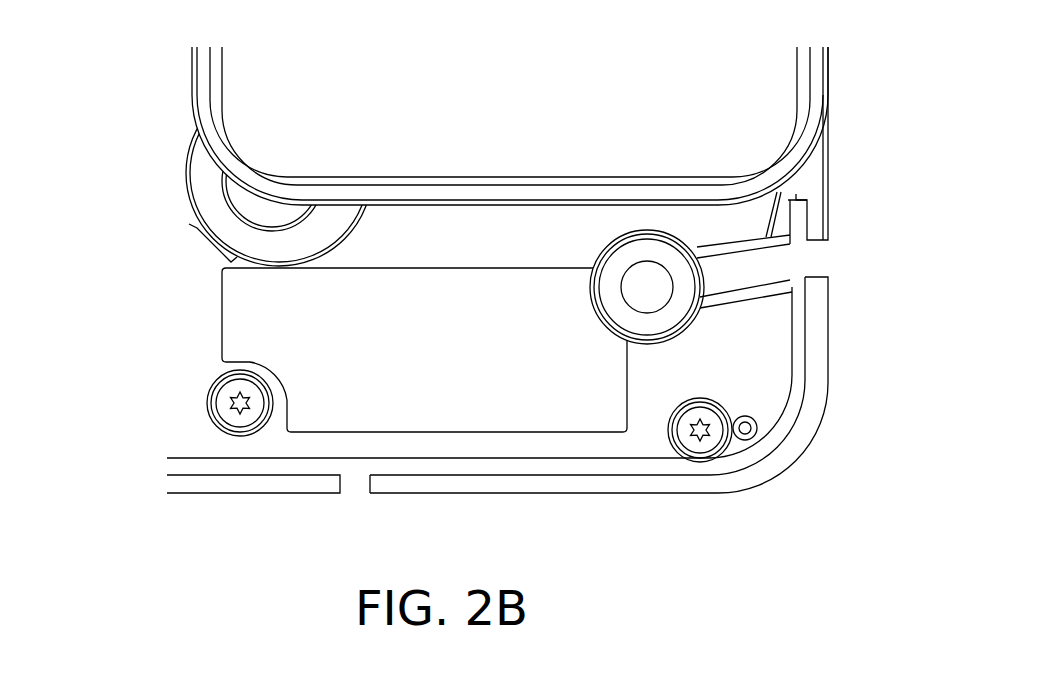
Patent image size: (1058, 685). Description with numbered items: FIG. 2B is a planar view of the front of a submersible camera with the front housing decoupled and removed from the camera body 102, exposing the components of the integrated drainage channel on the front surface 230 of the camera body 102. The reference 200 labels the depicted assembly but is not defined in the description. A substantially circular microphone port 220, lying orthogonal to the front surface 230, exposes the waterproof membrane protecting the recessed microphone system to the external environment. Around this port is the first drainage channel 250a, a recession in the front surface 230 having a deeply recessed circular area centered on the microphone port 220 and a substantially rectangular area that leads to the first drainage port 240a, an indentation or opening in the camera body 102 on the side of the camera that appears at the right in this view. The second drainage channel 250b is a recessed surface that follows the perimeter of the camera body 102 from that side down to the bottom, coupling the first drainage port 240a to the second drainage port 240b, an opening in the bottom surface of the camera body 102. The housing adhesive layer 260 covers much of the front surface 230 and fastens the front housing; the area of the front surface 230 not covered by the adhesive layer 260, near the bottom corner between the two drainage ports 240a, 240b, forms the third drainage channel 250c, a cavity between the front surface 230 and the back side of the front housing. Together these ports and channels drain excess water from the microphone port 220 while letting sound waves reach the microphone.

The camera body 102 is at (266, 489).
The housing 200 is at (868, 527).
The microphone port 220 is at (648, 289).
The front surface 230 is at (188, 374).
The first drainage port 240a is at (828, 250).
The second drainage port 240b is at (356, 490).
The first drainage channel 250a is at (731, 275).
The second drainage channel 250b is at (554, 468).
The third drainage channel 250c is at (653, 386).
The housing adhesive layer 260 is at (433, 373).